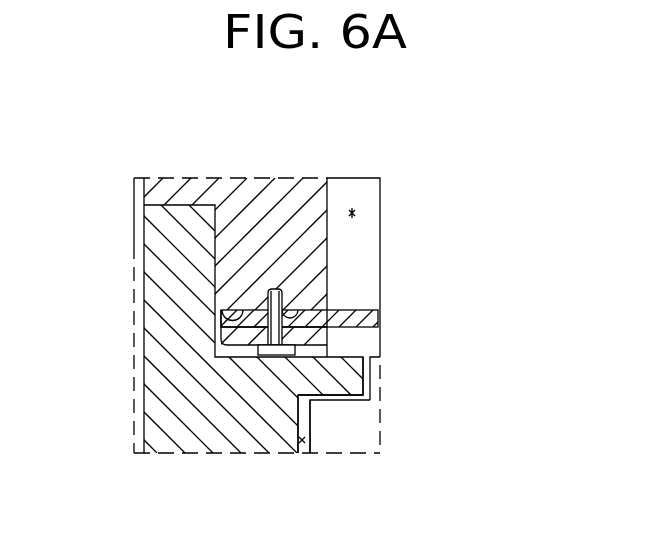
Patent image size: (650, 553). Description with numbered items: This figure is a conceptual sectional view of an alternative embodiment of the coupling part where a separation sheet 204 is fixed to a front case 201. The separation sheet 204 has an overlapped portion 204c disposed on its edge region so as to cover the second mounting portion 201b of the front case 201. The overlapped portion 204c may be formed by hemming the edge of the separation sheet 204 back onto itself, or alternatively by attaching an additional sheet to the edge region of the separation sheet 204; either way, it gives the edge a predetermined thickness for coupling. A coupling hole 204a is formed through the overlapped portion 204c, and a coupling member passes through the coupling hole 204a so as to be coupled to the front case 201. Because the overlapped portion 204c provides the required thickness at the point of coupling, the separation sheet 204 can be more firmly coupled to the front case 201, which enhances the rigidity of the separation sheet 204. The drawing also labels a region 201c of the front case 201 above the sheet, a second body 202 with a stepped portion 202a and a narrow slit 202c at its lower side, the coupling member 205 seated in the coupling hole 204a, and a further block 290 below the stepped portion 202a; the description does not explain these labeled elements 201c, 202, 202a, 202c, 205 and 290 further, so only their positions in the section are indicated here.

The front case 201 is at (170, 191).
The second mounting portion 201b is at (217, 306).
The housing portion 201c is at (356, 214).
The second housing 202 is at (170, 296).
The stepped portion 202a is at (340, 382).
The gap 202c is at (303, 442).
The separation sheet 204 is at (352, 318).
The coupling holes 204a is at (283, 311).
The overlapped portion 204c is at (328, 340).
The pin 205 is at (282, 296).
The block 290 is at (347, 425).